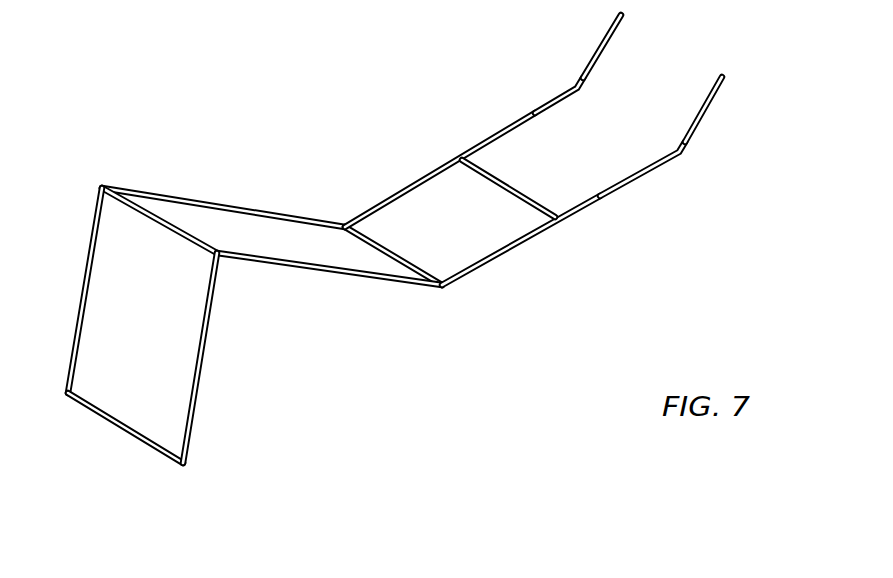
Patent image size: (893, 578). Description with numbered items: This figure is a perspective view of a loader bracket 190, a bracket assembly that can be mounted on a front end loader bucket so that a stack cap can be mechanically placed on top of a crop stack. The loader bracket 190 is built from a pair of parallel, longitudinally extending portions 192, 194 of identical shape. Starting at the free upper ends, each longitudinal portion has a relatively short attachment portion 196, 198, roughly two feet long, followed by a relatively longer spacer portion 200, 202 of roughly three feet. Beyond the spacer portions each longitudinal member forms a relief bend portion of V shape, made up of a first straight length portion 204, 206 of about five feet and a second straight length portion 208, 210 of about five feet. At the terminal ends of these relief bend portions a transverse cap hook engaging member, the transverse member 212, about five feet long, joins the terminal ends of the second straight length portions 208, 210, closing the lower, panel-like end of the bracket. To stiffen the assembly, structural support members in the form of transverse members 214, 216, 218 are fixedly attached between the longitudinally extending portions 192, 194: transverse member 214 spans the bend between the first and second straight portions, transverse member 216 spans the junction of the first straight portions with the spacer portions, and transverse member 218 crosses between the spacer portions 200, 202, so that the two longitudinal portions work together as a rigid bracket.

The loader bracket 190 is at (419, 250).
The longitudinally extending portion 192 is at (395, 193).
The longitudinally extending portion 194 is at (498, 259).
The attachment portion 196 is at (596, 50).
The attachment portion 198 is at (703, 117).
The spacer portion 200 is at (542, 107).
The spacer portion 202 is at (612, 195).
The first straight length portion 204 is at (244, 207).
The first straight length portion 206 is at (306, 270).
The second straight length portion 208 is at (88, 293).
The second straight length portion 210 is at (201, 375).
The transverse member 212 is at (115, 426).
The transverse member 214 is at (150, 212).
The transverse member 216 is at (388, 249).
The transverse member 218 is at (517, 189).